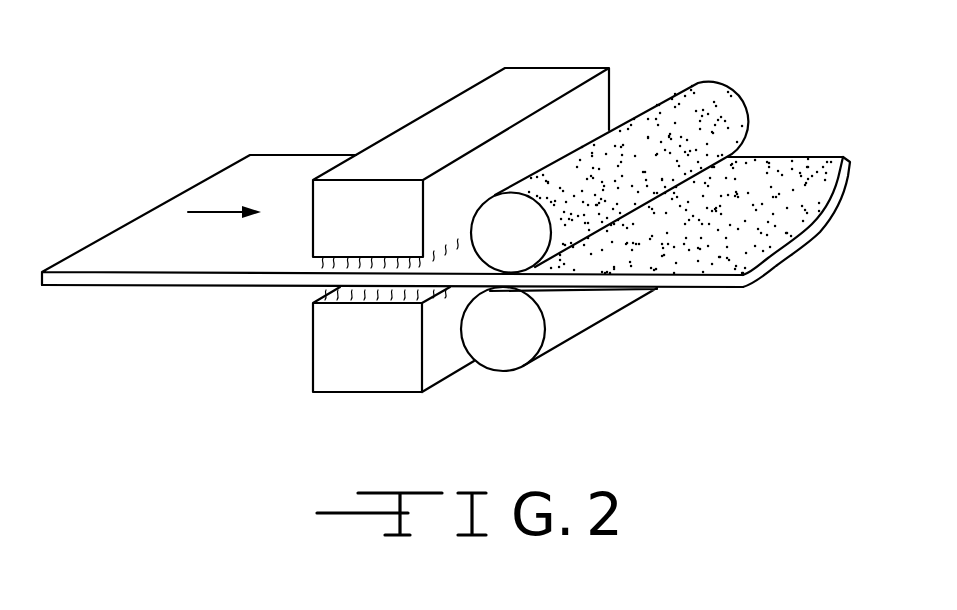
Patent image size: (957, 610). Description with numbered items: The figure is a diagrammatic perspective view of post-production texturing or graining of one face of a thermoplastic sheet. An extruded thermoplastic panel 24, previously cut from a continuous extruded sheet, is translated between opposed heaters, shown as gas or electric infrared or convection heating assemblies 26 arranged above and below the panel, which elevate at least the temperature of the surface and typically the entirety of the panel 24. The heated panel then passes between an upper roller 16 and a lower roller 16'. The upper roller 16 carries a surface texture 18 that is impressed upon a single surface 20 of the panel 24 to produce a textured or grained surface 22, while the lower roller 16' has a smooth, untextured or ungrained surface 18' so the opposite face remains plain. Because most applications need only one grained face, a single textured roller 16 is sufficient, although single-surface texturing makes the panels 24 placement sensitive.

The upper roller 16 is at (454, 233).
The lower roller 16' is at (503, 362).
The surface texture 18 is at (675, 155).
The smooth surface 18' is at (590, 345).
The surface 20 is at (278, 172).
The textured or grained surface 22 is at (770, 190).
The thermoplastic panel 24 is at (176, 286).
The heating assembly 26 is at (461, 112).